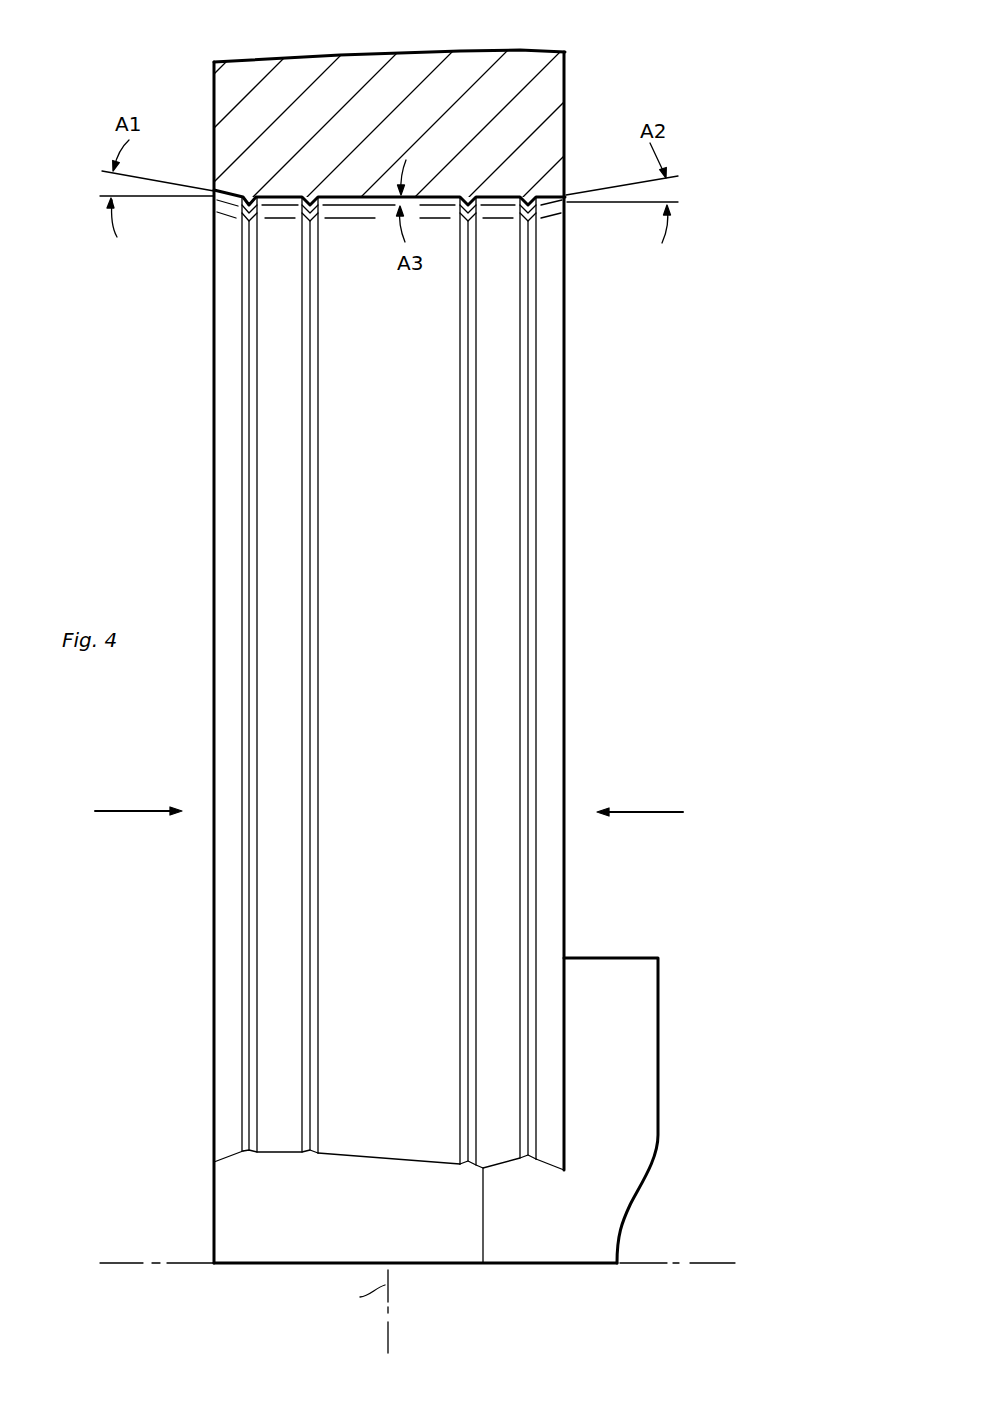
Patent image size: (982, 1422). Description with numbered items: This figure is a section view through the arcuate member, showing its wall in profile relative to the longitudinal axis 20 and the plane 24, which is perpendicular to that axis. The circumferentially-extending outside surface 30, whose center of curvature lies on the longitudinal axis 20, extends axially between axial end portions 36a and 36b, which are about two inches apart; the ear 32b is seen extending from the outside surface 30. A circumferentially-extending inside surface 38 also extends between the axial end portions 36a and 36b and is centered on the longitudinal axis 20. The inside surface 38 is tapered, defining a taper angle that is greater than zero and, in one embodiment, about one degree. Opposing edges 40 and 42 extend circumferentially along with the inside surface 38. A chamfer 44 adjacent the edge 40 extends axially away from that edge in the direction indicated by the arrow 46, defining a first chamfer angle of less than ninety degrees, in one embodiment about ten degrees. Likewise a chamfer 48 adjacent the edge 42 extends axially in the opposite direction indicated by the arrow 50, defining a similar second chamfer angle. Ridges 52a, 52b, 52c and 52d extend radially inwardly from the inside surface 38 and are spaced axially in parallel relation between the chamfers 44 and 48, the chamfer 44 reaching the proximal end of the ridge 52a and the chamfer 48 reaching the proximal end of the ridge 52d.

The longitudinal axis 20 is at (703, 1268).
The plane 24 is at (388, 1332).
The outside surface 30 is at (380, 55).
The ear 32b is at (628, 957).
The axial end portion 36a is at (214, 540).
The axial end portion 36b is at (564, 570).
The inside surface 38 is at (421, 664).
The edge 40 is at (214, 1160).
The edge 42 is at (565, 1163).
The chamfer 44 is at (228, 1150).
The arrow 46 is at (137, 813).
The chamfer 48 is at (548, 1162).
The arrow 50 is at (640, 815).
The ridge 52a is at (249, 330).
The ridge 52b is at (310, 373).
The ridge 52c is at (460, 427).
The ridge 52d is at (528, 383).